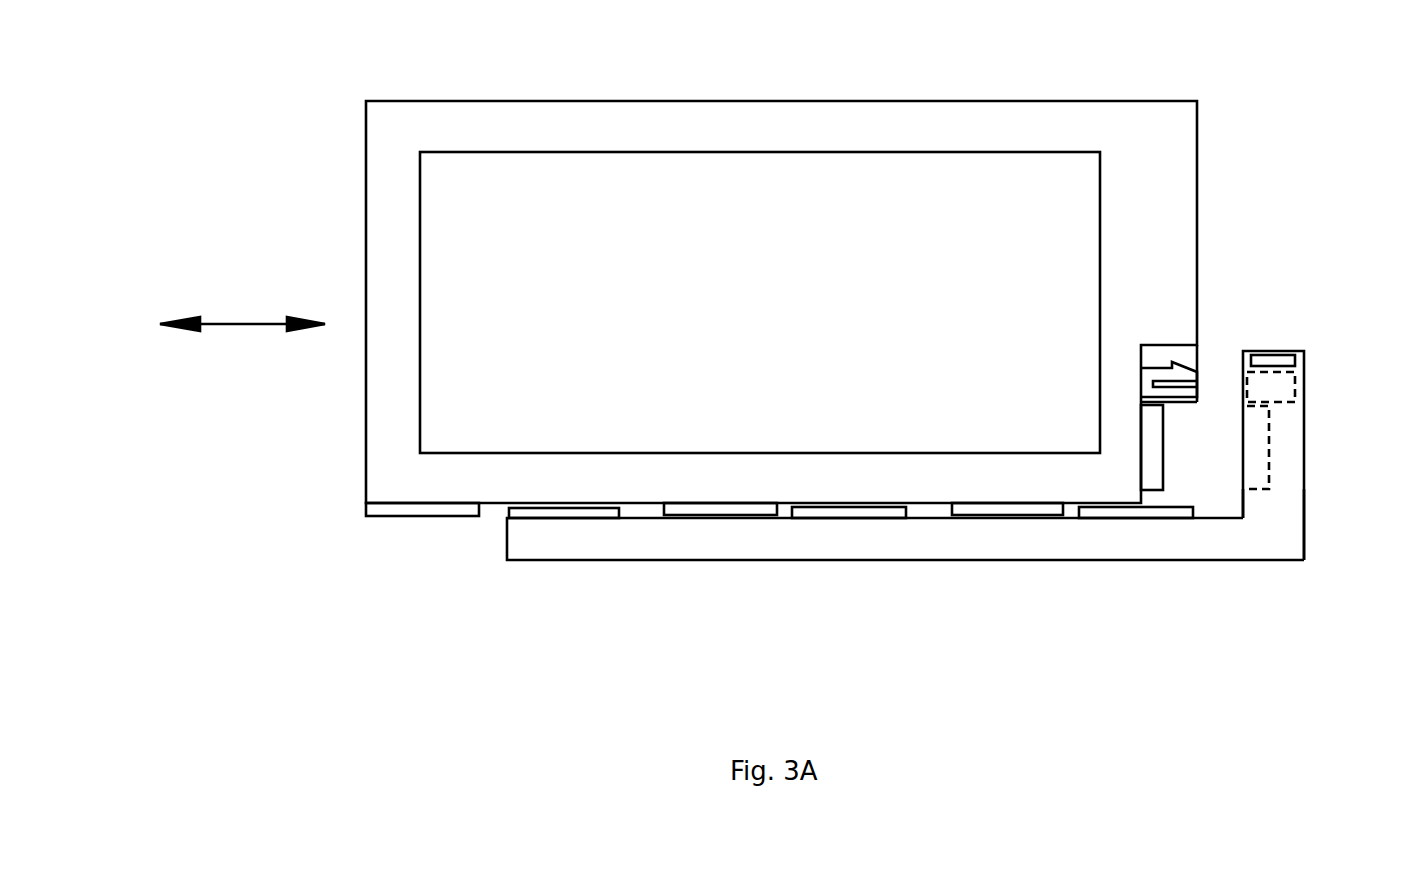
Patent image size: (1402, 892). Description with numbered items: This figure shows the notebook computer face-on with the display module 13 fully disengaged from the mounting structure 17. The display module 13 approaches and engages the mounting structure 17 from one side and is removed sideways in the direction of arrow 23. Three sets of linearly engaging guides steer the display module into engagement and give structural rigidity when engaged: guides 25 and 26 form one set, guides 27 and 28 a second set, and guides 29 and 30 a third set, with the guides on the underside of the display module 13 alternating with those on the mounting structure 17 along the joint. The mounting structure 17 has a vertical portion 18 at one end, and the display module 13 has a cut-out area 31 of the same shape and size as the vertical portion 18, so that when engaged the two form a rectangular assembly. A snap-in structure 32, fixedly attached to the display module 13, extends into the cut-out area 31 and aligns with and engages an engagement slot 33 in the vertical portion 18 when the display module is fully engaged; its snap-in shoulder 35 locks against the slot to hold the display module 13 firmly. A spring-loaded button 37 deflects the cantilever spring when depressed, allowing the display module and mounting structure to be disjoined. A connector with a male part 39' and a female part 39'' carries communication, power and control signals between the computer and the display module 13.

The display module 13 is at (838, 100).
The mounting structure 17 is at (933, 540).
The vertical portion 18 is at (1304, 483).
The arrow 23 is at (240, 324).
The guide 25 is at (416, 516).
The guide 26 is at (541, 512).
The guide 27 is at (703, 508).
The guide 28 is at (865, 508).
The guide 29 is at (1003, 508).
The guide 30 is at (1115, 513).
The cut-out area 31 is at (1160, 358).
The snap-in structure 32 is at (1206, 357).
The engagement slot 33 is at (1278, 372).
The snap-in shoulder 35 is at (1274, 510).
The spring-loaded button 37 is at (1262, 357).
The male part 39' is at (1182, 447).
The female part 39'' is at (1319, 404).